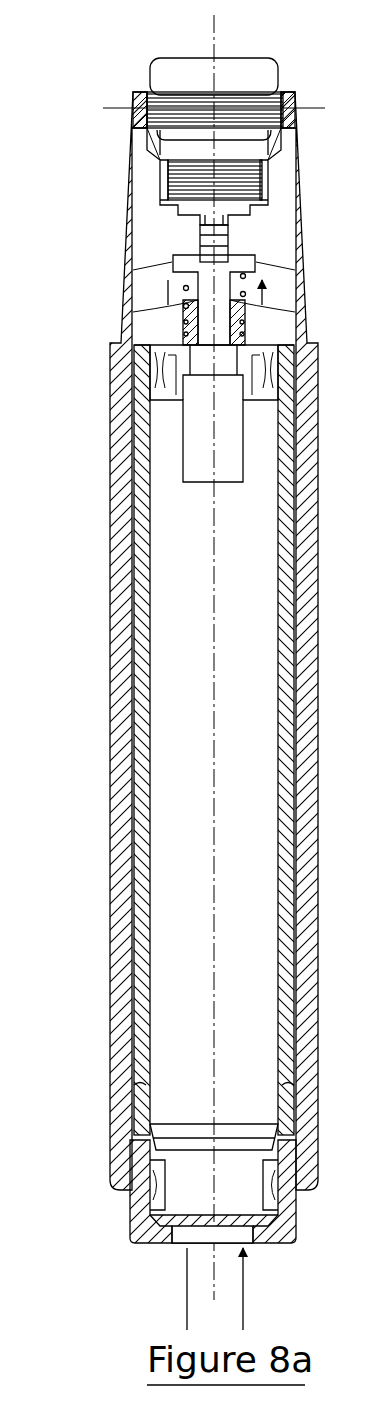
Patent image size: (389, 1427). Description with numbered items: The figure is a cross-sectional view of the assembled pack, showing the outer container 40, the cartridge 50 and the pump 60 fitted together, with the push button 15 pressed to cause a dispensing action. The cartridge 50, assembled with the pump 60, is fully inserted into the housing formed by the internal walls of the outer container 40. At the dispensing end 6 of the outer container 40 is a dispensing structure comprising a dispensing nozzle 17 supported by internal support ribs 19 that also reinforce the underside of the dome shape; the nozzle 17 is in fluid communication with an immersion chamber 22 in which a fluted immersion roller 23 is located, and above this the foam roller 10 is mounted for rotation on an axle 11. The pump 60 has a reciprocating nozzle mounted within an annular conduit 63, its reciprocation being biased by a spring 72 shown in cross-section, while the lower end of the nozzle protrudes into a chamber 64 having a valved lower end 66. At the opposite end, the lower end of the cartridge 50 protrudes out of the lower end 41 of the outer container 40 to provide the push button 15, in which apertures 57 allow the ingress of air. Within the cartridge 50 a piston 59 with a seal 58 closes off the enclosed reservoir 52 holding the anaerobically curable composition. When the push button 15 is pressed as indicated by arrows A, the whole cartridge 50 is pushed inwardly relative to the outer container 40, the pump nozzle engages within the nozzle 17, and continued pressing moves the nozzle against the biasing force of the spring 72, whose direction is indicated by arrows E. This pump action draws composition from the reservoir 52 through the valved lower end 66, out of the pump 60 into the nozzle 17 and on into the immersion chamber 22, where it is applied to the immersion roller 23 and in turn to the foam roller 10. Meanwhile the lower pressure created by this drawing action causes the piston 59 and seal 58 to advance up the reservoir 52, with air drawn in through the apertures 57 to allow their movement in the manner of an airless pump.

The dispensing end 6 is at (96, 153).
The foam roller 10 is at (245, 66).
The axle 11 is at (260, 104).
The push button 15 is at (292, 1215).
The dispensing nozzle 17 is at (200, 243).
The internal support ribs 19 is at (276, 268).
The immersion chamber 22 is at (268, 200).
The immersion roller 23 is at (262, 175).
The outer container 40 is at (308, 797).
The lower end 41 is at (92, 1170).
The cartridge 50 is at (285, 830).
The reservoir 52 is at (170, 912).
The apertures 57 is at (252, 1243).
The seal 58 is at (242, 1125).
The piston 59 is at (258, 1172).
The pump 60 is at (268, 322).
The annular conduit 63 is at (178, 320).
The chamber 64 is at (185, 432).
The valved lower end 66 is at (208, 490).
The spring 72 is at (262, 320).
The arrows E is at (150, 300).
The arrows A is at (209, 1291).